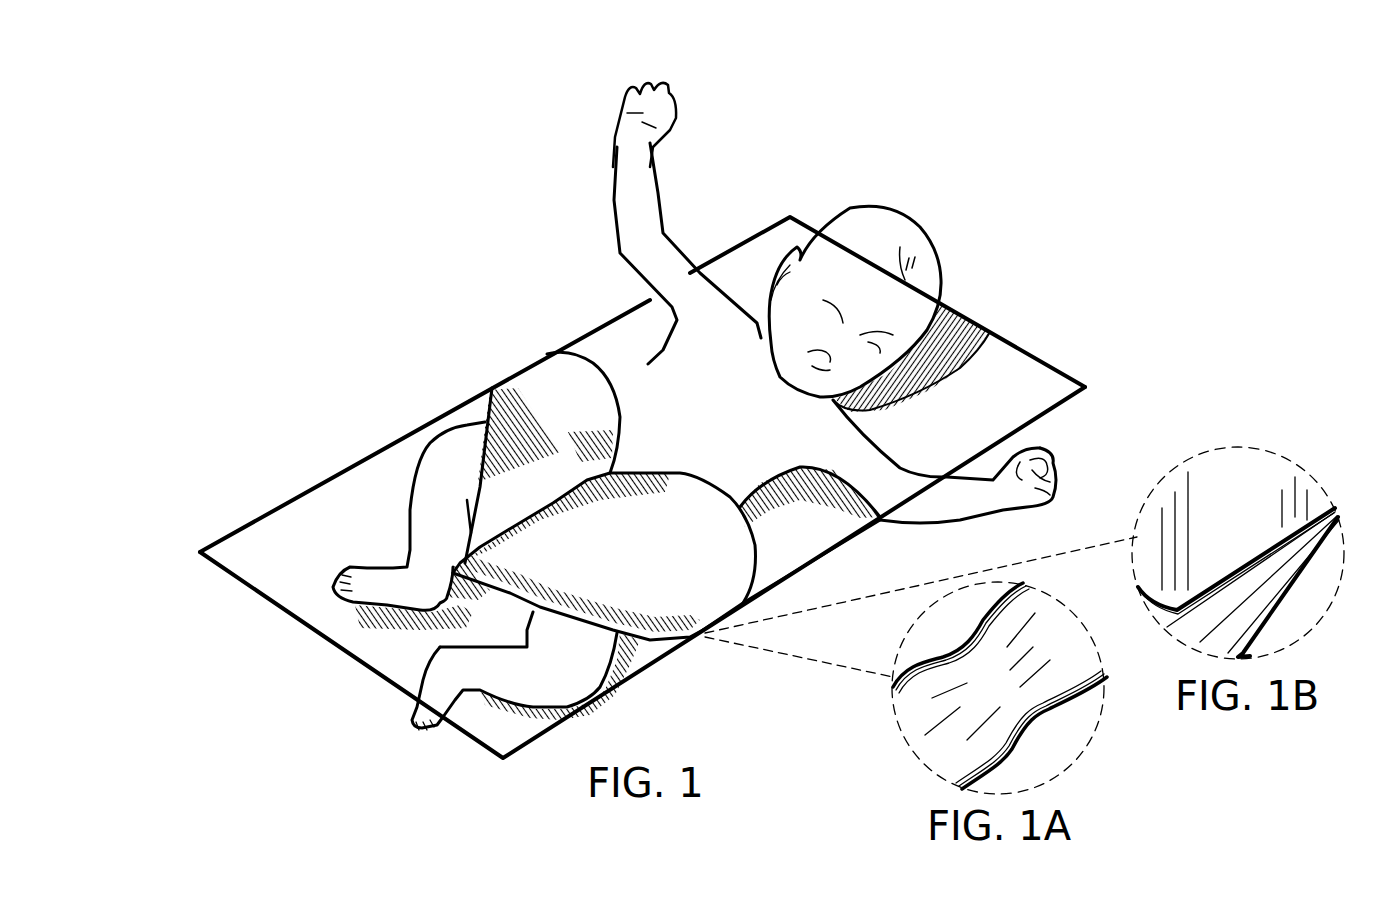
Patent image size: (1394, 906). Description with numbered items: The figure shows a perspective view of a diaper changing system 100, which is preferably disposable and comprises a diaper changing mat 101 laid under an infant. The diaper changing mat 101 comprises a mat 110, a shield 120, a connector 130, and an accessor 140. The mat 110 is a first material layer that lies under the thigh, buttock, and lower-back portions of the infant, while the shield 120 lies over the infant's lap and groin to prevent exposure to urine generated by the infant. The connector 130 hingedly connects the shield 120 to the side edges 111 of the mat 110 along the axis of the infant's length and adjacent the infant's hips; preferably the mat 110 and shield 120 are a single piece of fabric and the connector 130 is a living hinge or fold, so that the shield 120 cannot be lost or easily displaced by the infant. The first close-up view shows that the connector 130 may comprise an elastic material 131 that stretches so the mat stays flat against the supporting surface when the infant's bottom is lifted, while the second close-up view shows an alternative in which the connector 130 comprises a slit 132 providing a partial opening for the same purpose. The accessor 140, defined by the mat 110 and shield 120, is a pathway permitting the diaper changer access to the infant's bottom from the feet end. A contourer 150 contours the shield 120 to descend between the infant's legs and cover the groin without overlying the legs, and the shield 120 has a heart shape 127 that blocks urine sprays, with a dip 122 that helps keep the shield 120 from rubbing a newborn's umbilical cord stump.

In FIG. 1, the diaper changing system 100 is at (288, 144).
In FIG. 1, the diaper changing mat 101 is at (598, 308).
In FIG. 1, the mat 110 is at (278, 537).
In FIG. 1, the side edges 111 is at (361, 460).
In FIG. 1, the shield 120 is at (547, 370).
In FIG. 1, the dip 122 is at (633, 463).
In FIG. 1, the heart shape 127 is at (638, 590).
In FIG. 1, the connector 130 is at (490, 390).
In FIG. 1A, the elastic material 131 is at (1055, 687).
In FIG. 1B, the slit 132 is at (1247, 600).
In FIG. 1, the accessor 140 is at (462, 614).
In FIG. 1, the contourer 150 is at (470, 568).